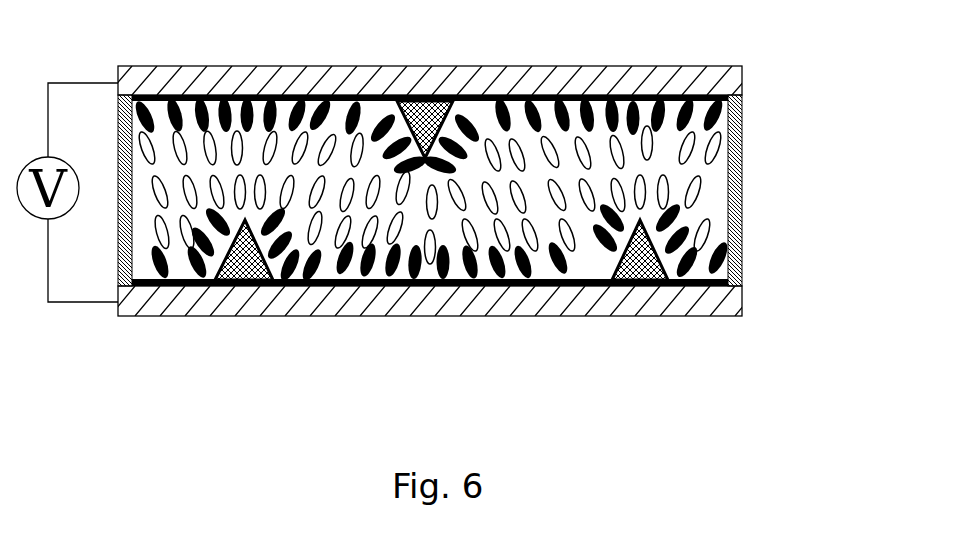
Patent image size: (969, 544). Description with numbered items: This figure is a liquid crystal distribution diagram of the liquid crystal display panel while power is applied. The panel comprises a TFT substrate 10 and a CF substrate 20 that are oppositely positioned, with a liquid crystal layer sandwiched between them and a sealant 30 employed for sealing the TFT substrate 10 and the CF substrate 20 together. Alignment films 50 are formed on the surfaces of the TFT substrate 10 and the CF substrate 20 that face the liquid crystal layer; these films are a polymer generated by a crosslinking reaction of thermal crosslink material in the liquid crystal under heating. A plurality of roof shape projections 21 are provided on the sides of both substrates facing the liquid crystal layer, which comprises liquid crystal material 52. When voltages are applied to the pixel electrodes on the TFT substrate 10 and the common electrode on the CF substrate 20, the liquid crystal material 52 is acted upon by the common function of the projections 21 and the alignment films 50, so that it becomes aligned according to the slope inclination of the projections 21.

The TFT substrate 10 is at (720, 305).
The CF substrate 20 is at (705, 86).
The roof shape projection 21 is at (640, 265).
The sealant 30 is at (742, 147).
The alignment film 50 is at (742, 277).
The liquid crystal material 52 is at (696, 195).